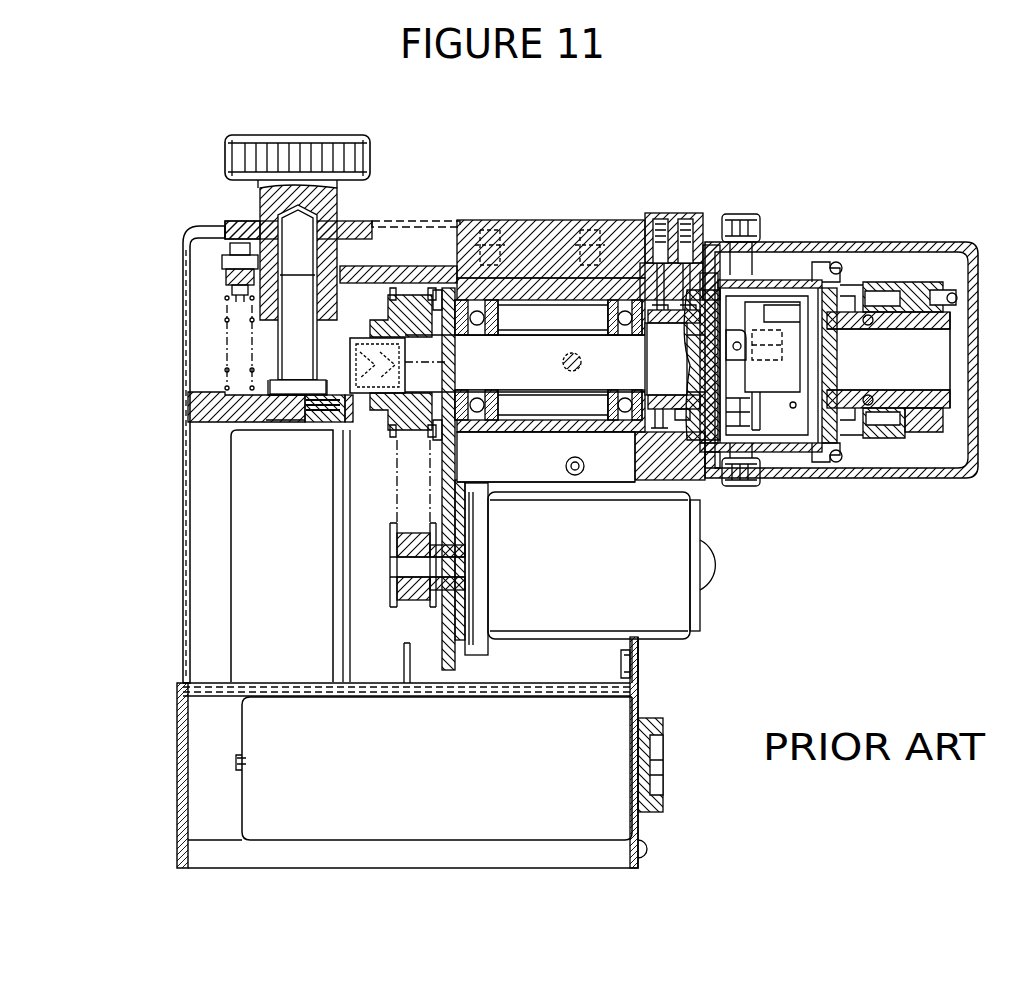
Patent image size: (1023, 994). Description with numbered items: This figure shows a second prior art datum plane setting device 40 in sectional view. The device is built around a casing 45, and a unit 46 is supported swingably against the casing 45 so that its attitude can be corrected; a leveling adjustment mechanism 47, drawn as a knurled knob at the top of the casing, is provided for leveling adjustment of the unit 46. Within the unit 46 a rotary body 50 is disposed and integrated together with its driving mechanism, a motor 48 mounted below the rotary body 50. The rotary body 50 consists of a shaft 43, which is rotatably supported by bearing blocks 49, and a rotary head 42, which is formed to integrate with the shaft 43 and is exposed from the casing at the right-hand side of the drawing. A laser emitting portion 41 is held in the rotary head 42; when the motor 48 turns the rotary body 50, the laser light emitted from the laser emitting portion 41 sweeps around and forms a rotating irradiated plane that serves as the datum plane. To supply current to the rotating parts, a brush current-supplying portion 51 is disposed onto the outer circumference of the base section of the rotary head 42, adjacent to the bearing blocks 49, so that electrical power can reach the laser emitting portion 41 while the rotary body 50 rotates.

The datum plane setting device 40 is at (750, 190).
The laser emitting portion 41 is at (780, 310).
The rotary head 42 is at (780, 468).
The shaft 43 is at (497, 300).
The casing 45 is at (190, 232).
The unit 46 is at (452, 265).
The leveling adjustment mechanism 47 is at (290, 152).
The motor 48 is at (664, 612).
The bearing blocks 49 is at (605, 340).
The rotary body 50 is at (526, 352).
The brush current-supplying portion 51 is at (676, 280).